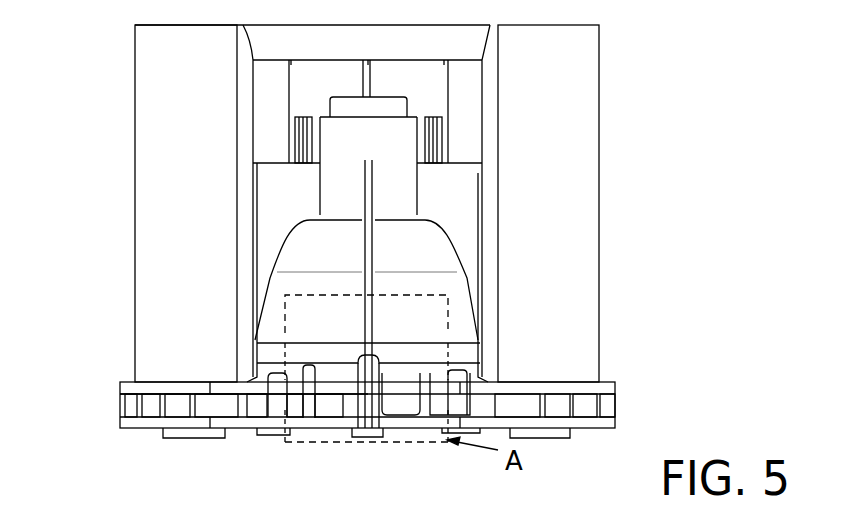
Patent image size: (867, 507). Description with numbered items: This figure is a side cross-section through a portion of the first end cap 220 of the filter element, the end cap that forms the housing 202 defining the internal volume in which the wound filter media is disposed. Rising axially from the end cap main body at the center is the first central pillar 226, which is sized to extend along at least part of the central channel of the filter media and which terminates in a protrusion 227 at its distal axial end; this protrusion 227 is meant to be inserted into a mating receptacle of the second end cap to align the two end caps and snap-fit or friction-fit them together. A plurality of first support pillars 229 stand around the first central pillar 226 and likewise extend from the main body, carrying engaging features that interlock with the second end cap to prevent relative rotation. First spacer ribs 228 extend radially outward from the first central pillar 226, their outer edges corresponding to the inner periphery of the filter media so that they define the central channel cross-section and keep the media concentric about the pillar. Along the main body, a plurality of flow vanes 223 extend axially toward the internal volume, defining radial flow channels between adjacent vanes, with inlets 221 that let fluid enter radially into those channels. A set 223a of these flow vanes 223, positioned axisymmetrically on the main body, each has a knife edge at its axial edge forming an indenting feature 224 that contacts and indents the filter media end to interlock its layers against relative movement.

The first end cap 220 is at (638, 127).
The housing 202 is at (580, 235).
The protrusion 227 is at (342, 104).
The first central pillar 226 is at (322, 118).
The first support pillars 229 is at (283, 161).
The first spacer ribs 228 is at (363, 232).
The indenting feature 224 is at (362, 360).
The inlets 221 is at (552, 394).
The flow vanes 223 is at (308, 407).
The set of flow vanes 223a is at (368, 391).